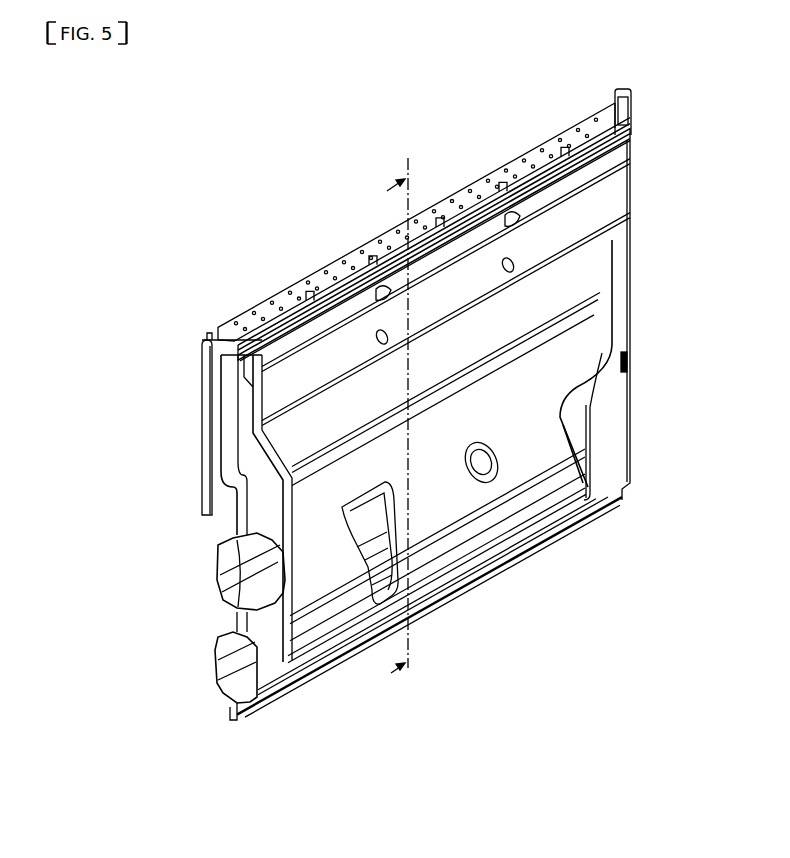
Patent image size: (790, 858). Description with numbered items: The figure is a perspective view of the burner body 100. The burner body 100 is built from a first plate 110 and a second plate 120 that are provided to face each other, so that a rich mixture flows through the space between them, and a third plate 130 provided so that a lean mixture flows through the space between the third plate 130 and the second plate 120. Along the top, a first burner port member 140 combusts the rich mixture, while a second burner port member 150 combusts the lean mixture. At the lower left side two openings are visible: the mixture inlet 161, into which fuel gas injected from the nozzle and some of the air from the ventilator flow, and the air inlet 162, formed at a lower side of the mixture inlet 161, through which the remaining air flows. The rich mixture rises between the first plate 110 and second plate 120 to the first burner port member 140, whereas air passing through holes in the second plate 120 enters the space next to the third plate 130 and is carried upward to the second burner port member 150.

The burner body 100 is at (223, 117).
The first plate 110 is at (237, 517).
The second plate 120 is at (175, 493).
The third plate 130 is at (158, 530).
The first burner port member 140 is at (313, 266).
The second burner port member 150 is at (633, 136).
The mixture inlet 161 is at (215, 578).
The air inlet 162 is at (225, 684).